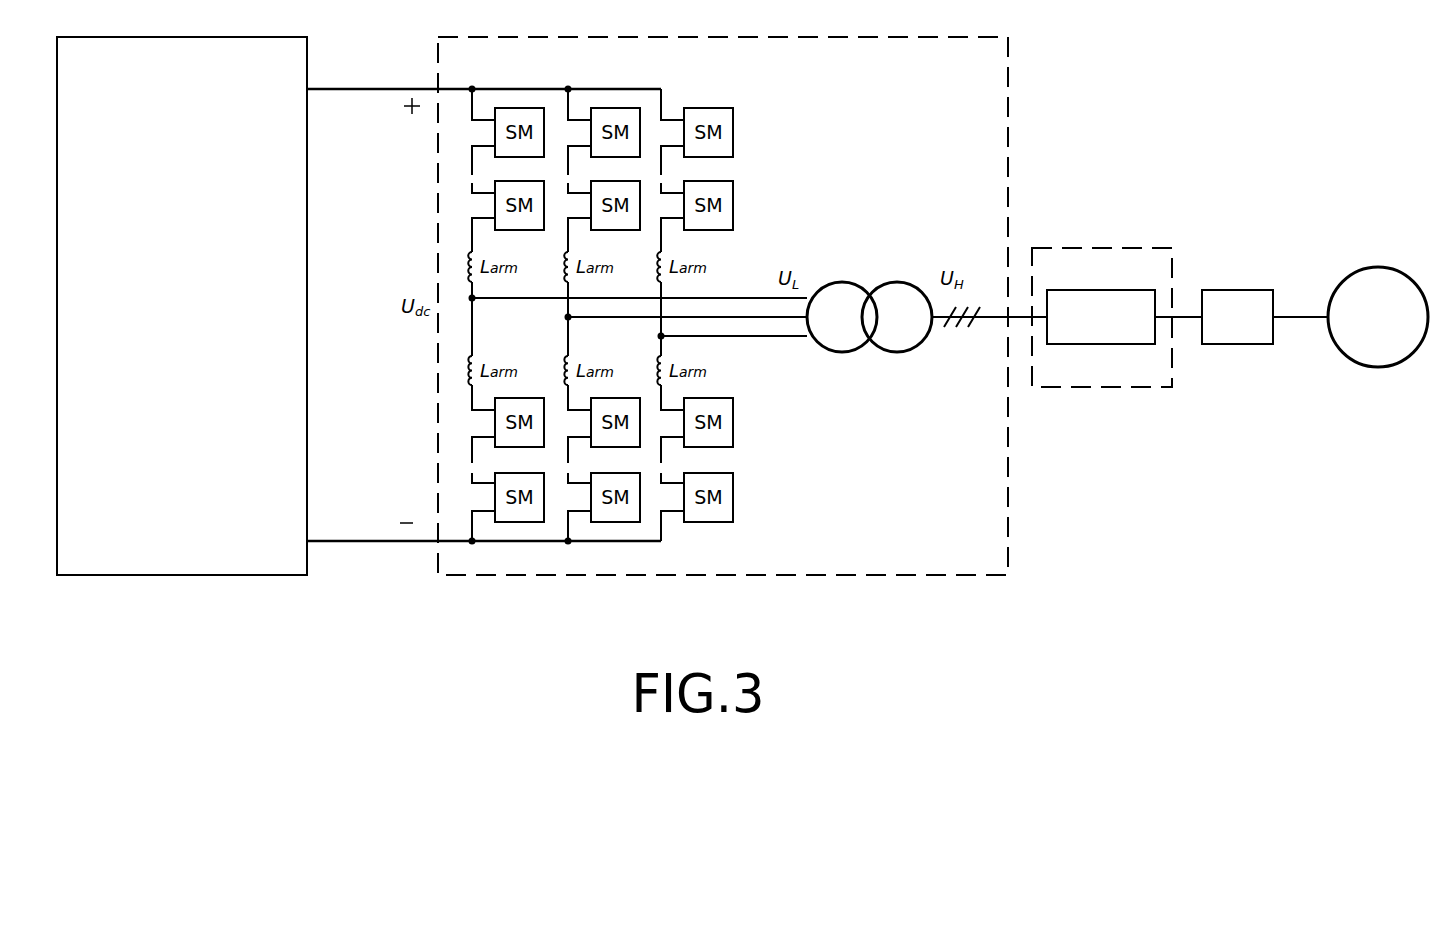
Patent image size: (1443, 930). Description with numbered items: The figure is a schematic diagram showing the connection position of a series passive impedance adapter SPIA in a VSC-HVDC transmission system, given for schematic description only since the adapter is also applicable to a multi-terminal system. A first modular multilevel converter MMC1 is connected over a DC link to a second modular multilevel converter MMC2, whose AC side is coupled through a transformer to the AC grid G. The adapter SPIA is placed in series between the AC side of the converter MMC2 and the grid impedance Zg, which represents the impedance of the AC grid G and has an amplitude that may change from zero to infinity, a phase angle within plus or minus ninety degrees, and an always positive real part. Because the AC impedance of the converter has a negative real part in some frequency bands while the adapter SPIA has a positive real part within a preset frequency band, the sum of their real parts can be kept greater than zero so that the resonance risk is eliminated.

The first modular multilevel converter MMC1 is at (182, 306).
The second modular multilevel converter MMC2 is at (723, 306).
The series passive impedance adapter SPIA is at (1102, 296).
The impedance of AC grid Zg is at (1250, 359).
The grid G is at (1378, 317).